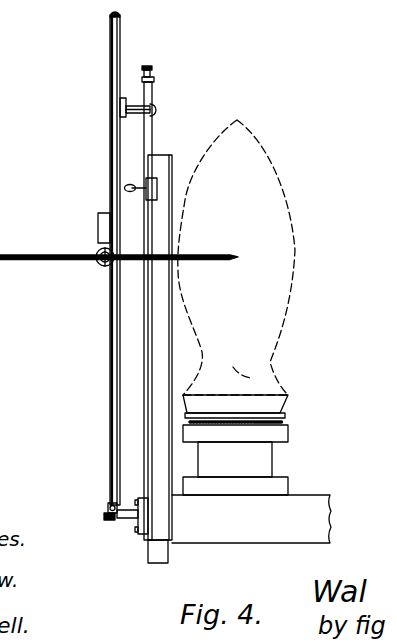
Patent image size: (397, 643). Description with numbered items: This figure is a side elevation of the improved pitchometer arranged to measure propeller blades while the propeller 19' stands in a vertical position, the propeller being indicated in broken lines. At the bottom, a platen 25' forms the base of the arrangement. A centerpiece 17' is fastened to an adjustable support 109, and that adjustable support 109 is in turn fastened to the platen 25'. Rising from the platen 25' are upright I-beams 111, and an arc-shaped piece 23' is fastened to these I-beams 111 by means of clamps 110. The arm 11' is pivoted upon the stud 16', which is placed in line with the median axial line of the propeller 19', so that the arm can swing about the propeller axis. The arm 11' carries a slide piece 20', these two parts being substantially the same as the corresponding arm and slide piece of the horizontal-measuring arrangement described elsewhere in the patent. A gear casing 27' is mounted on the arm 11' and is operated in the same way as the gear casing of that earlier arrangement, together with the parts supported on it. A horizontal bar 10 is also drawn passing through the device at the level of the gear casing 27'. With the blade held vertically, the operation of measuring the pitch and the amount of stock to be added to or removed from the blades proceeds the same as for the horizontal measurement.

The rod / bar 10 is at (119, 277).
The arm 11' is at (93, 258).
The stud 16' is at (92, 528).
The centerpiece 17' is at (123, 537).
The propeller 19' is at (263, 257).
The slide piece 20' is at (177, 68).
The arc-shaped piece 23' is at (168, 104).
The platen 25' is at (265, 501).
The gear casing 27' is at (78, 239).
The adjustable support 109 is at (157, 559).
The clamps 110 is at (152, 181).
The upright I-beams 111 is at (163, 212).